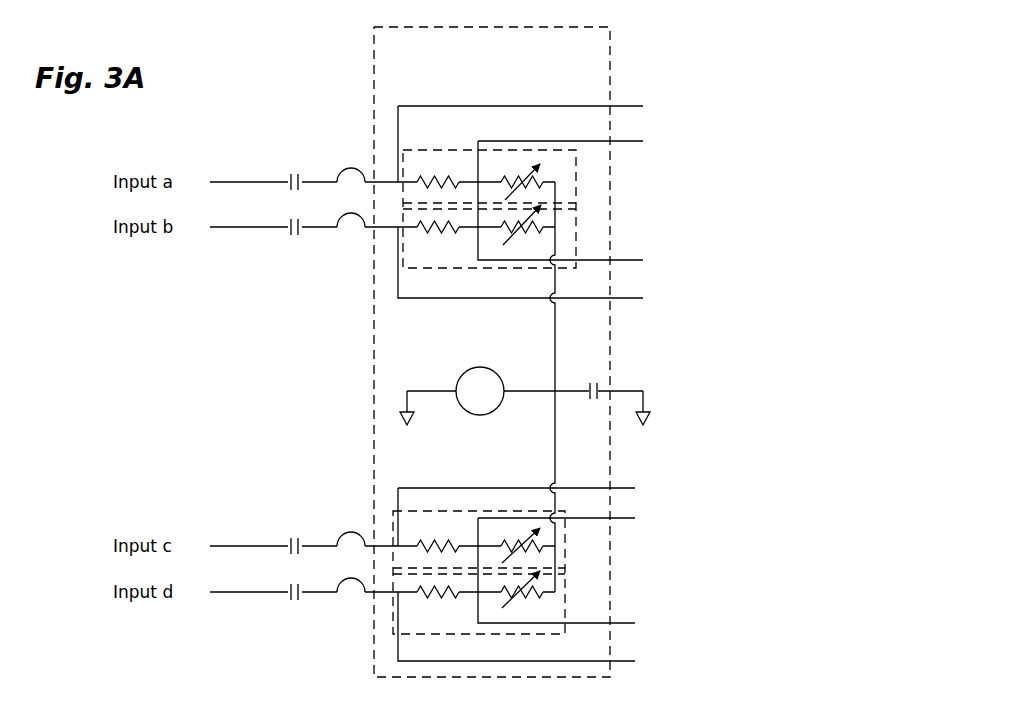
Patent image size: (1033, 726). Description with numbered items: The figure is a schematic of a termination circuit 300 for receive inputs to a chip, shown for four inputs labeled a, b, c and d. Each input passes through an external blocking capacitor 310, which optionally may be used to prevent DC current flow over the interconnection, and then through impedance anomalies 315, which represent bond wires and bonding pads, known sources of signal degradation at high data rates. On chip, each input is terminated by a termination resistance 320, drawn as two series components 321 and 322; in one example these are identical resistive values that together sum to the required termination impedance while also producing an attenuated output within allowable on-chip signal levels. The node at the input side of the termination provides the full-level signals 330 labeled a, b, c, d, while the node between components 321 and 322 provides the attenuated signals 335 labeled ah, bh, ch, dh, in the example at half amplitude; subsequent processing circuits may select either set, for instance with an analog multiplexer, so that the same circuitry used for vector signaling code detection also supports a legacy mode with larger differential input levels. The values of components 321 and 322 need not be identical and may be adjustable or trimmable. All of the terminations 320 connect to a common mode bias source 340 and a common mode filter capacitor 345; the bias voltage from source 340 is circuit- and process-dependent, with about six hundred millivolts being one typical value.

The interface circuit 300 is at (612, 50).
The external blocking capacitors 310 is at (288, 210).
The impedance anomalies 315 is at (362, 210).
The termination resistance 320 is at (583, 217).
The resistive component 321 is at (455, 212).
The resistive component 322 is at (545, 210).
The full-level signals 330 is at (668, 112).
The attenuated signals 335 is at (685, 158).
The common mode bias source 340 is at (475, 365).
The common mode filter capacitor 345 is at (592, 378).